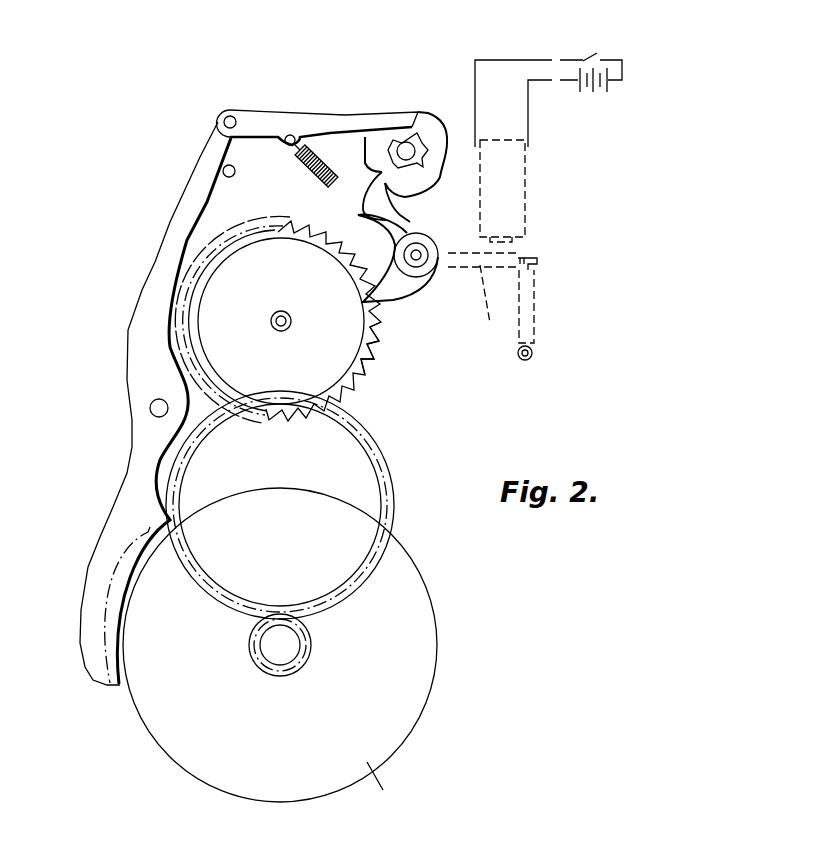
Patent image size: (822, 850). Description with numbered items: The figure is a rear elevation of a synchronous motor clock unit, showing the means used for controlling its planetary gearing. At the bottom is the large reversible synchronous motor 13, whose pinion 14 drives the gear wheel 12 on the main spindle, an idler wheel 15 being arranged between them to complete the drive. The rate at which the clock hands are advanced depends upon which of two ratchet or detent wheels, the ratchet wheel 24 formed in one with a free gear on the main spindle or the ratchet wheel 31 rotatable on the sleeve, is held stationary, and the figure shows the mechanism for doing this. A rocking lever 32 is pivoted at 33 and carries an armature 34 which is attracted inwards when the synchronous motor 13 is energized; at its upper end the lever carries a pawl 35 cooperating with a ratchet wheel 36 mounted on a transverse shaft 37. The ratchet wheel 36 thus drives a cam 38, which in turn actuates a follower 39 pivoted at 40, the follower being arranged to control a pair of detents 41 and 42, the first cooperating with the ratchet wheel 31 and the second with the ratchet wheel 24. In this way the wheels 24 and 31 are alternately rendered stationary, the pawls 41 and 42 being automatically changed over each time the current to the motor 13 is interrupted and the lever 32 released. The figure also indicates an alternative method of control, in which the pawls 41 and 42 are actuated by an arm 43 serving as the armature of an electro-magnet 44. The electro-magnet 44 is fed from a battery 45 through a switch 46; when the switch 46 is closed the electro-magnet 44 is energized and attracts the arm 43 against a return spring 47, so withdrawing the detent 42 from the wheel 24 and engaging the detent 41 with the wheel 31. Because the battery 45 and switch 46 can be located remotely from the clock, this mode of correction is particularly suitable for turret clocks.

The gear wheel 12 is at (225, 285).
The synchronous motor 13 is at (420, 600).
The pinion 14 is at (295, 668).
The idler wheel 15 is at (393, 495).
The ratchet or detent wheel 24 is at (343, 373).
The ratchet wheel 31 is at (366, 353).
The rocking lever 32 is at (148, 380).
The pivot 33 is at (152, 414).
The armature 34 is at (113, 592).
The pawl 35 is at (292, 130).
The ratchet wheel 36 is at (418, 133).
The transverse shaft 37 is at (412, 152).
The cam 38 is at (400, 128).
The follower 39 is at (377, 188).
The pivot 40 is at (418, 258).
The detent 41 is at (385, 217).
The detent 42 is at (398, 292).
The arm 43 is at (487, 314).
The electro-magnet 44 is at (528, 216).
The battery 45 is at (606, 92).
The switch 46 is at (588, 56).
The return spring 47 is at (535, 324).